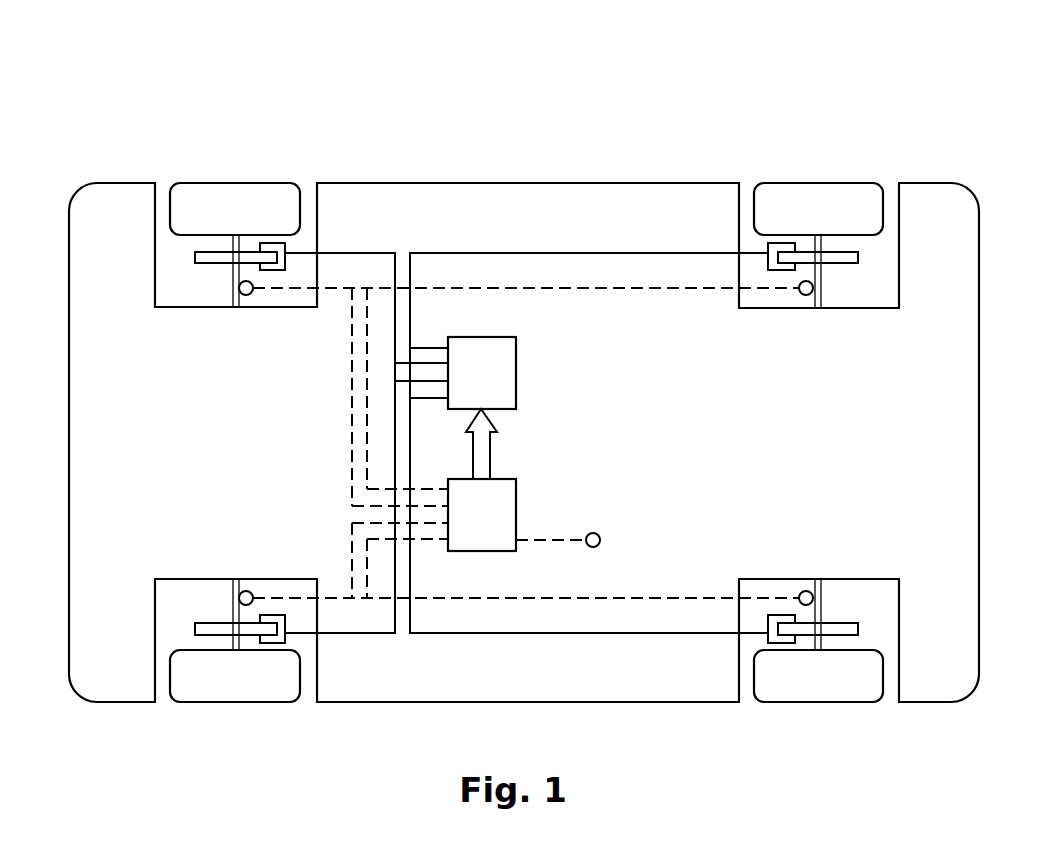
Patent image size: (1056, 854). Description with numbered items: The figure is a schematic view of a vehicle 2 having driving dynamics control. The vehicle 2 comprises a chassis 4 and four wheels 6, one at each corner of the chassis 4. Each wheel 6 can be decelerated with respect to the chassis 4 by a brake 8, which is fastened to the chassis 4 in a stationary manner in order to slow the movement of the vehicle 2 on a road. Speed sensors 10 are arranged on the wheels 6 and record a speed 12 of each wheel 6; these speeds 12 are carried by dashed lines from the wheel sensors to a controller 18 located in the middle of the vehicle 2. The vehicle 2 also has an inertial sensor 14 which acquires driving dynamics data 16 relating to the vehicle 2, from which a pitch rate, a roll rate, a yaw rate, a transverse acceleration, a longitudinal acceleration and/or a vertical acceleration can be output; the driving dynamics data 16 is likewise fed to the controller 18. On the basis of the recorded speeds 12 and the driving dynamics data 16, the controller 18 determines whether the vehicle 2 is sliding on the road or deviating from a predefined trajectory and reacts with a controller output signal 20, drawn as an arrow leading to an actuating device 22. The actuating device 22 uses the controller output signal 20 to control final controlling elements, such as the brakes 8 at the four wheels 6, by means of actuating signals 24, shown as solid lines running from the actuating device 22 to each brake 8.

The vehicle 2 is at (972, 150).
The chassis 4 is at (528, 183).
The wheels 6 is at (234, 183).
The brake 8 is at (215, 265).
The speed sensors 10 is at (246, 296).
The speed 12 is at (328, 292).
The inertial sensor 14 is at (598, 534).
The driving dynamics data 16 is at (557, 541).
The controller 18 is at (516, 515).
The controller output signal 20 is at (490, 450).
The actuating device 22 is at (516, 372).
The actuating signals 24 is at (353, 253).